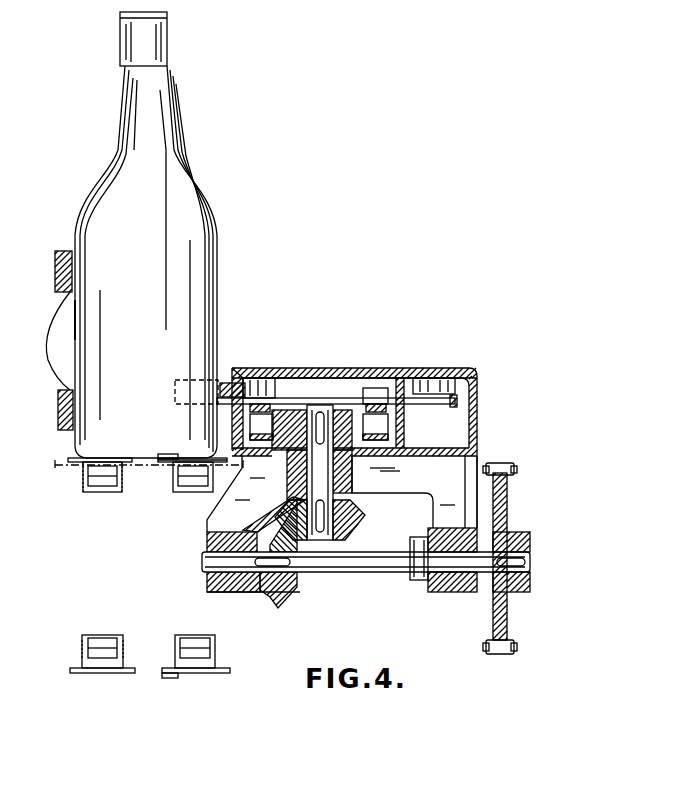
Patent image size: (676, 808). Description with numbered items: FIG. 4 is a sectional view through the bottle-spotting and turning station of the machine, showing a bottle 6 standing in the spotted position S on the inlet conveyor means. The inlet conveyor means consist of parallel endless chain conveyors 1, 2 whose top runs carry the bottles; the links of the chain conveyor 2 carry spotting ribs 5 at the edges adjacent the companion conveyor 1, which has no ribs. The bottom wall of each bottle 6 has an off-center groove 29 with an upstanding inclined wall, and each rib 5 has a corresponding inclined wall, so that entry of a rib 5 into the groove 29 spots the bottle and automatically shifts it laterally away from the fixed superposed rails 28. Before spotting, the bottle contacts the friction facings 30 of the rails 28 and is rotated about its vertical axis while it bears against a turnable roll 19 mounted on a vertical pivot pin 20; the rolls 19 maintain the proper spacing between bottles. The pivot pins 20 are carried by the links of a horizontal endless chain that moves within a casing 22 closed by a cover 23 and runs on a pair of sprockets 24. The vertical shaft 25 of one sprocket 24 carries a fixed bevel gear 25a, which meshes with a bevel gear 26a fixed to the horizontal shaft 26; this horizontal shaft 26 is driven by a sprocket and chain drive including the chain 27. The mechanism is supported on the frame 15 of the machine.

The spotted position S is at (203, 182).
The bottle 6 is at (76, 208).
The fixed superposed rails 28 is at (55, 263).
The friction facings 30 is at (55, 318).
The endless chain conveyor 1 is at (82, 488).
The endless chain conveyor 2 is at (173, 488).
The spotting rib 5 is at (166, 456).
The groove 29 is at (162, 456).
The turnable roll 19 is at (176, 385).
The vertical pivot pin 20 is at (219, 372).
The casing 22 is at (478, 424).
The cover 23 is at (398, 370).
The sprocket 24 is at (273, 410).
The vertical shaft 25 is at (323, 405).
The bevel gear 25a is at (352, 528).
The horizontal shaft 26 is at (366, 576).
The bevel gear 26a is at (272, 596).
The frame 15 is at (207, 543).
The chain 27 is at (509, 463).